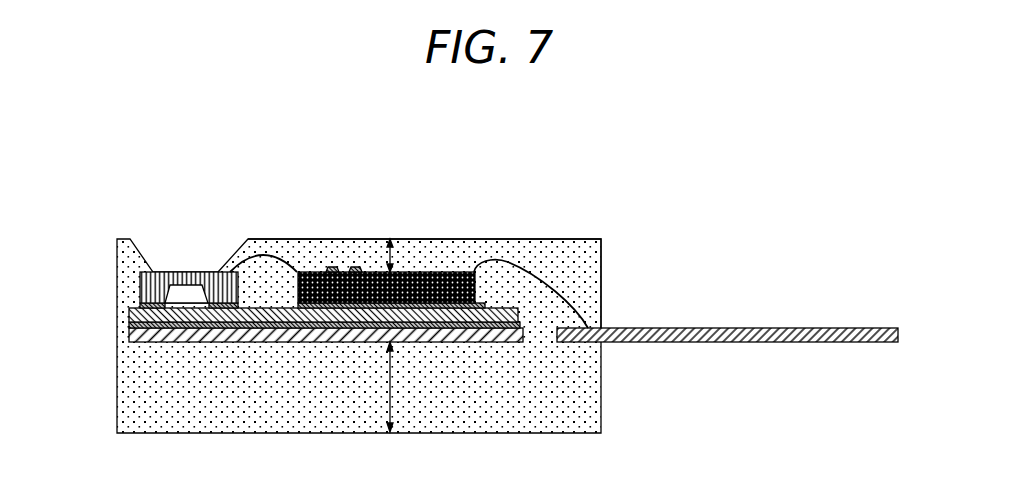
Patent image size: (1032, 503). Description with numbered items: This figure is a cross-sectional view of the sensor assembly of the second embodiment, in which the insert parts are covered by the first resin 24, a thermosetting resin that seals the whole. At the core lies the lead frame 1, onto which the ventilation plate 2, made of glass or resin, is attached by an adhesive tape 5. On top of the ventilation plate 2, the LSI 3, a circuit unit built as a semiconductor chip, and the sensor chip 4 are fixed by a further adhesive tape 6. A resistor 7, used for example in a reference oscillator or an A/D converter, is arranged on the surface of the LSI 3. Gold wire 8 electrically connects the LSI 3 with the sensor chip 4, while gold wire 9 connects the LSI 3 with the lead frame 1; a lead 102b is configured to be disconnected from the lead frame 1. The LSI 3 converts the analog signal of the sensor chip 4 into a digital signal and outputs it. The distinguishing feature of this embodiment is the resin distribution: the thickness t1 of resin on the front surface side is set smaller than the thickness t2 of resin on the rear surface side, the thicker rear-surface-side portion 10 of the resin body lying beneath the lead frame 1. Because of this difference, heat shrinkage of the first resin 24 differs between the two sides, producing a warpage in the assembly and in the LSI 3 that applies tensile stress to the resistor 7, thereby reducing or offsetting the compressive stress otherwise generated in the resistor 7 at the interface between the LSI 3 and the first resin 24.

The lead frame 1 is at (273, 342).
The ventilation plate 2 is at (129, 315).
The LSI (circuit unit) 3 is at (437, 272).
The sensor chip 4 is at (193, 272).
The adhesive tape 5 is at (129, 325).
The adhesive tape 6 is at (140, 303).
The resistor 7 is at (361, 266).
The gold wire 8 is at (282, 266).
The gold wire 9 is at (533, 267).
The sealing resin 10 is at (500, 433).
The first resin 24 is at (580, 252).
The lead 102b is at (652, 342).
The thickness of resin on front surface side t1 is at (389, 255).
The thickness of resin on rear surface side t2 is at (390, 388).